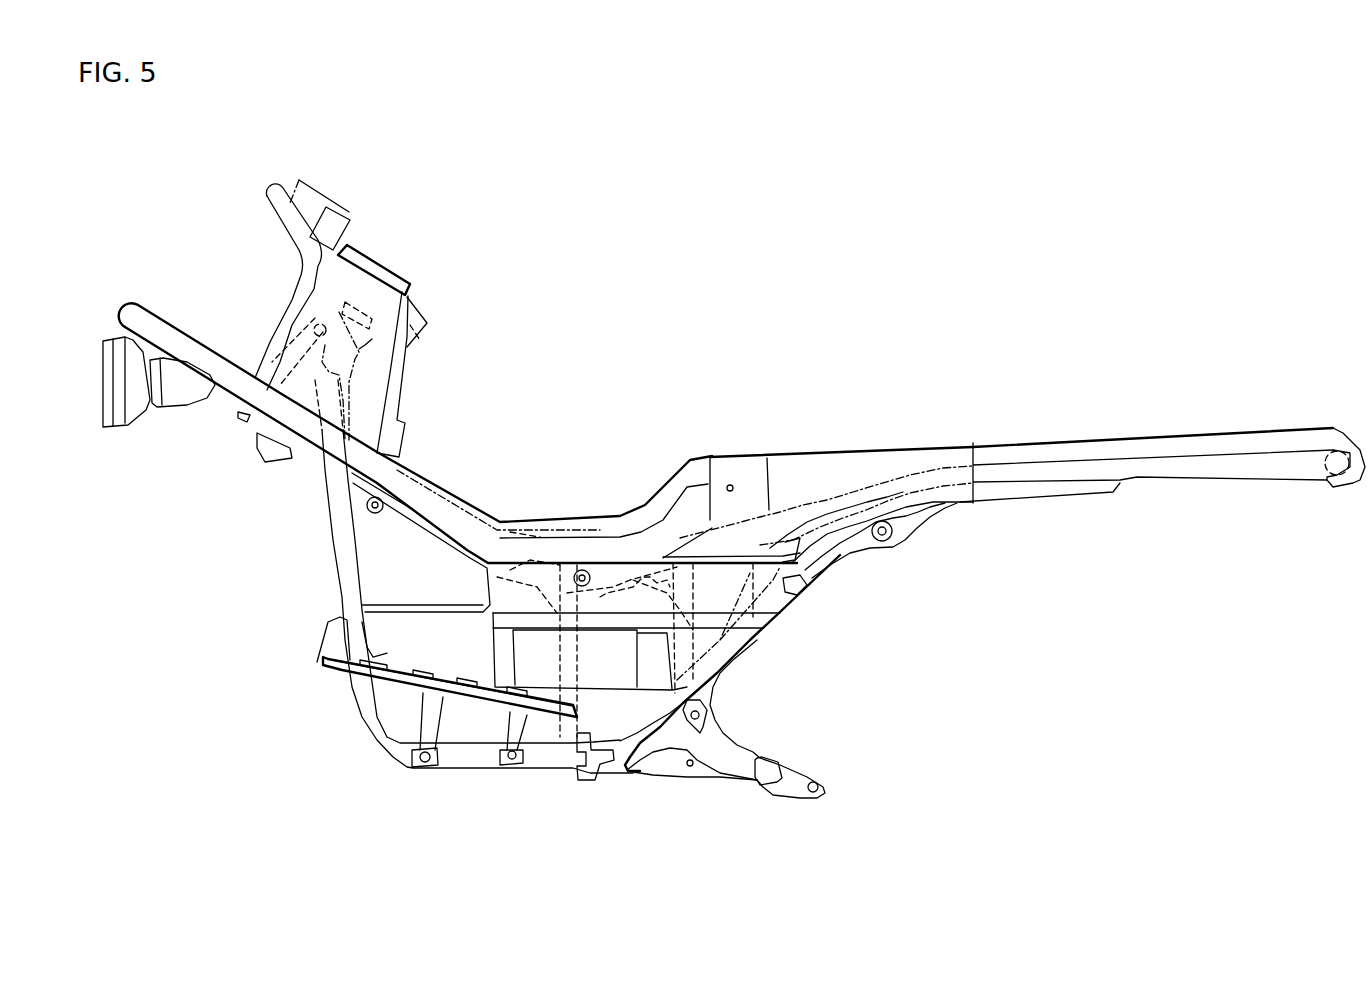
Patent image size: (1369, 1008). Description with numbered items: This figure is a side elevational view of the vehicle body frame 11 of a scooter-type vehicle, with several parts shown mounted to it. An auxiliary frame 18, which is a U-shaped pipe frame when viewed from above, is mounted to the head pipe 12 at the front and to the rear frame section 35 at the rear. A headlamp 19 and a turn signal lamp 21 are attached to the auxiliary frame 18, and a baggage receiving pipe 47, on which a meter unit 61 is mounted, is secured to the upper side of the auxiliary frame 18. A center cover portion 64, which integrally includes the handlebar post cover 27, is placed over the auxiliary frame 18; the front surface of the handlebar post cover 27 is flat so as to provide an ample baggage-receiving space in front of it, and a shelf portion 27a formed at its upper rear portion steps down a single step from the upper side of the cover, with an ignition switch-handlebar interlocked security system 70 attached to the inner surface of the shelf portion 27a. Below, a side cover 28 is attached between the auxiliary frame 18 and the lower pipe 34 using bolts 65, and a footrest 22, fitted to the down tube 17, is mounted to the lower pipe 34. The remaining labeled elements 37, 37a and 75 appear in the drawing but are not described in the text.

The vehicle body frame 11 is at (653, 325).
The head pipe 12 is at (353, 356).
The down tube 17 is at (348, 593).
The auxiliary frame 18 is at (443, 510).
The headlamp 19 is at (137, 417).
The turn signal lamp 21 is at (187, 397).
The footrest 22 is at (333, 670).
The handlebar post cover 27 is at (380, 350).
The shelf portion 27a is at (437, 307).
The side cover 28 is at (387, 587).
The lower pipe 34 is at (500, 732).
The rear frame section 35 is at (800, 503).
The stay 37 is at (460, 723).
The stay mounting foot 37a is at (425, 760).
The baggage receiving pipe 47 is at (272, 332).
The meter unit 61 is at (353, 213).
The center cover portion 64 is at (497, 510).
The bolts 65 is at (375, 512).
The ignition switch-handlebar interlocked security system 70 is at (427, 337).
The support bracket 75 is at (335, 618).